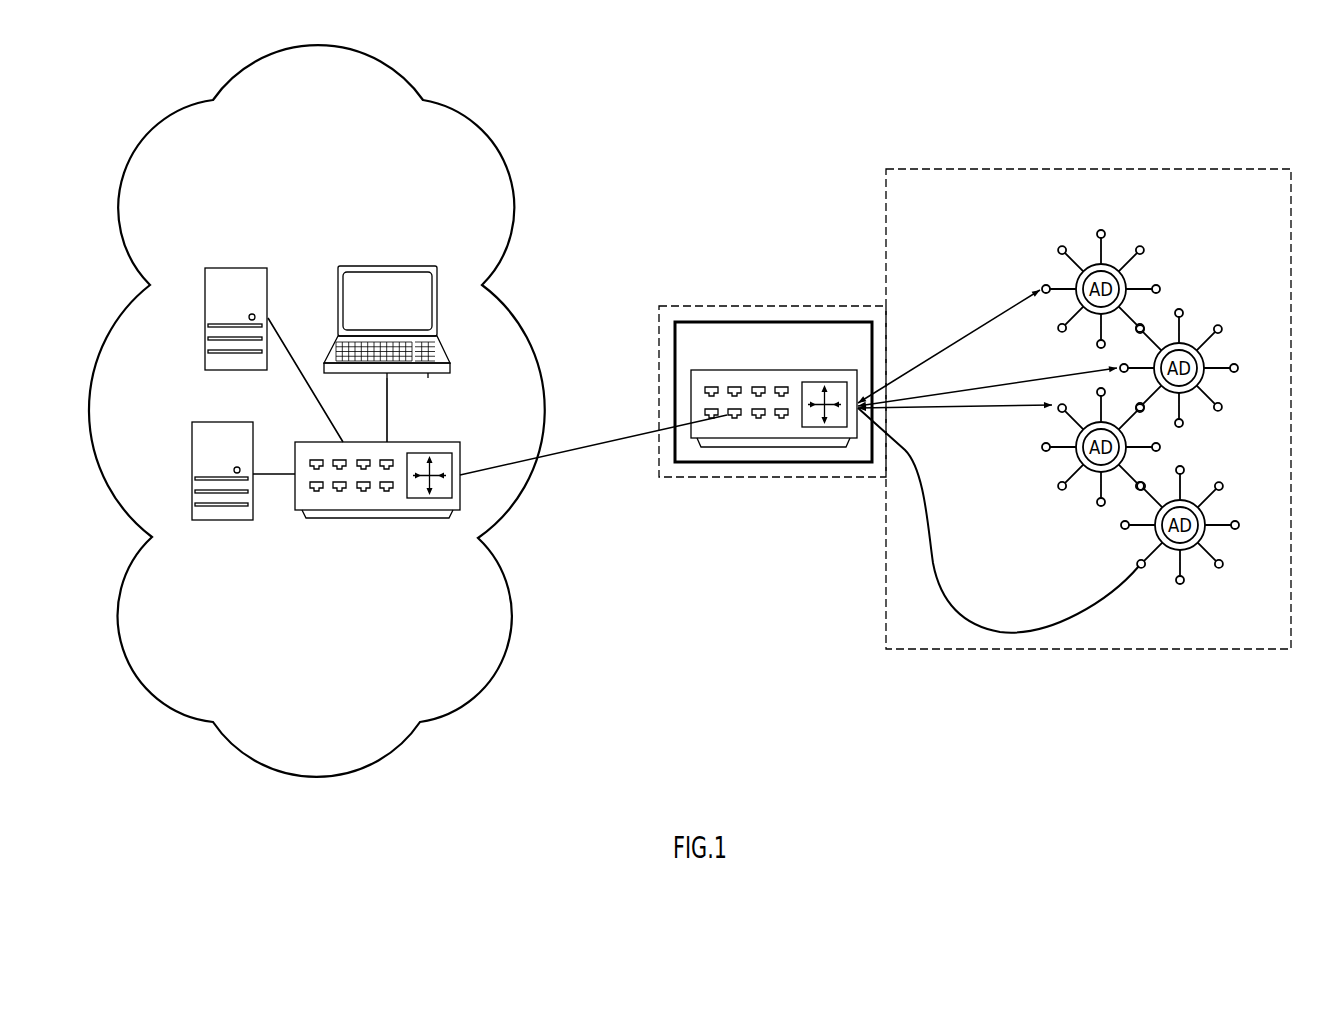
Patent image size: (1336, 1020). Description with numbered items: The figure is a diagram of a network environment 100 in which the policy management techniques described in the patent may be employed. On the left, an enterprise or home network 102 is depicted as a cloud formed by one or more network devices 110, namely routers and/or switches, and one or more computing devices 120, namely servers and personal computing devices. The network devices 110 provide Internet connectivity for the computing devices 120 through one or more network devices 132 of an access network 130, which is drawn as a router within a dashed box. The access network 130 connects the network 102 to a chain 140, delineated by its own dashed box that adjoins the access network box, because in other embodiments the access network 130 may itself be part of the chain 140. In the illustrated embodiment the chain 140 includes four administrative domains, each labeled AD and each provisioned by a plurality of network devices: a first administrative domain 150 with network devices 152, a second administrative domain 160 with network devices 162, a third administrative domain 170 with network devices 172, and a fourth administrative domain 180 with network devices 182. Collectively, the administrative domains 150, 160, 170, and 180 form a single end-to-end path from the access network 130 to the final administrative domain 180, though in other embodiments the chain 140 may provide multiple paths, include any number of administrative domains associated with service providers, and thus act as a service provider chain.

The network environment 100 is at (785, 98).
The enterprise or home network 102 is at (503, 648).
The network devices 110 is at (373, 518).
The computing devices 120 is at (236, 372).
The access network 130 is at (760, 322).
The network devices 132 is at (773, 447).
The chain 140 is at (1291, 584).
The first administrative domain 150 is at (1124, 278).
The network devices 152 is at (1105, 233).
The second administrative domain 160 is at (1188, 392).
The network devices 162 is at (1184, 312).
The third administrative domain 170 is at (1079, 459).
The network devices 172 is at (1099, 506).
The fourth administrative domain 180 is at (1157, 534).
The network devices 182 is at (1220, 481).